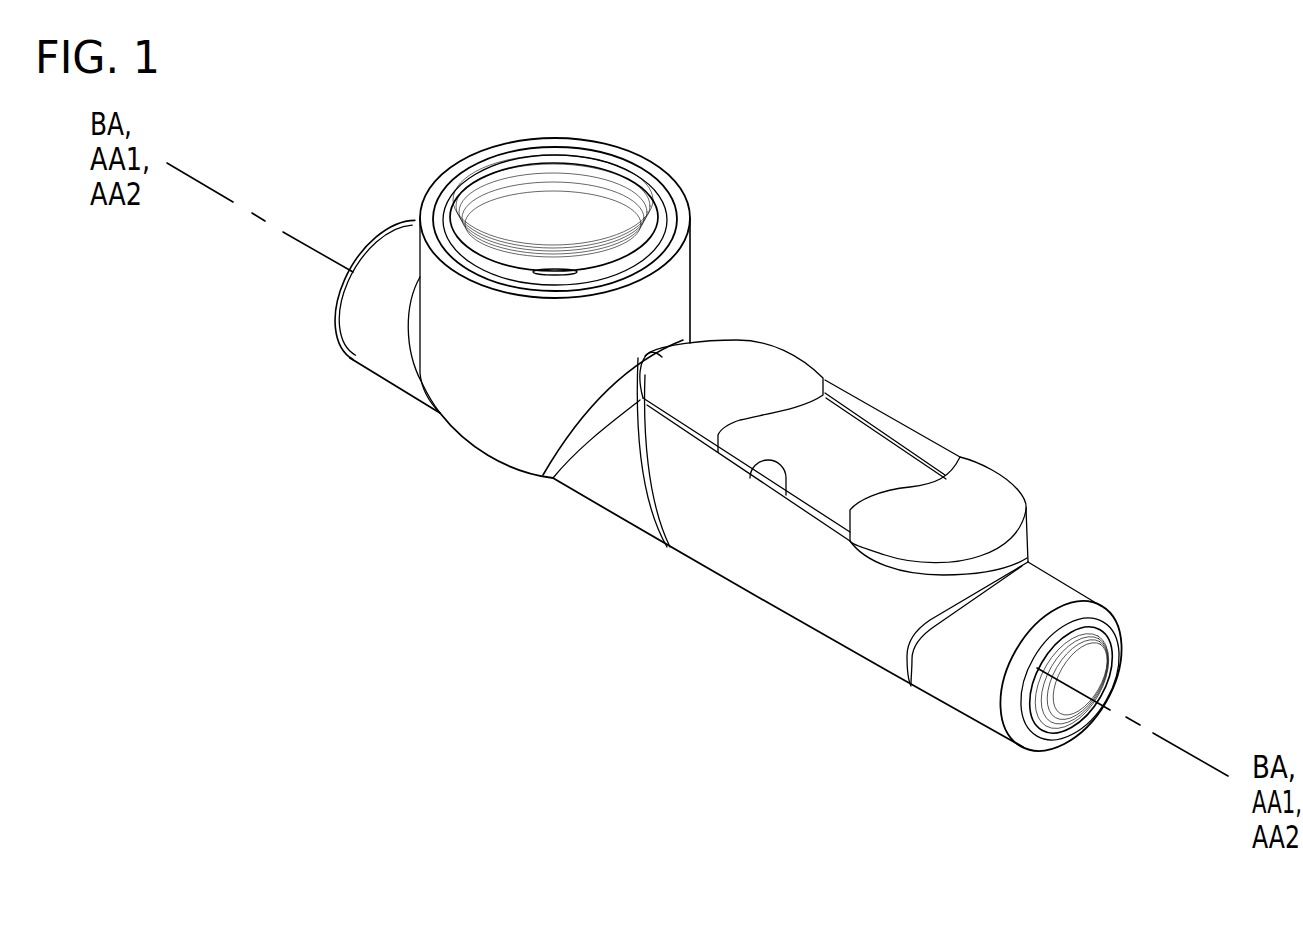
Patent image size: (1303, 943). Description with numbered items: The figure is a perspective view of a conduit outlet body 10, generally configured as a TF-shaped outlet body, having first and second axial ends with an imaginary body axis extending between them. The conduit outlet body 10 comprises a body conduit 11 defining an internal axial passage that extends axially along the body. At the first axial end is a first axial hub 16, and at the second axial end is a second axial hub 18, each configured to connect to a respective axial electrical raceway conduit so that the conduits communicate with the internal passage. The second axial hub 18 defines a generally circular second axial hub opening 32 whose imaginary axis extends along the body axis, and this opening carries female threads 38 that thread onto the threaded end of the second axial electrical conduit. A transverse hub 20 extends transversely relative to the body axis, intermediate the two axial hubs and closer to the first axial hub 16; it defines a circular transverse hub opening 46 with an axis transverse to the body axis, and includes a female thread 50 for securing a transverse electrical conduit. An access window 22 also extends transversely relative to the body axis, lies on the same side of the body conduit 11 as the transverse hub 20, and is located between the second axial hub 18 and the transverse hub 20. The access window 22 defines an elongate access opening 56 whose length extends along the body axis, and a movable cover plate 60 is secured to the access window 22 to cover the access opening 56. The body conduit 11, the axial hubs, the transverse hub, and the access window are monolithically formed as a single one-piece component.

The conduit outlet body 10 is at (1140, 165).
The body conduit 11 is at (604, 481).
The first axial hub 16 is at (337, 325).
The second axial hub 18 is at (1060, 747).
The transverse hub 20 is at (650, 176).
The access window 22 is at (882, 422).
The second axial hub opening 32 is at (1071, 668).
The female threads 38 is at (1043, 734).
The transverse hub opening 46 is at (518, 228).
The female thread 50 is at (558, 168).
The access opening 56 is at (785, 496).
The movable cover plate 60 is at (983, 483).